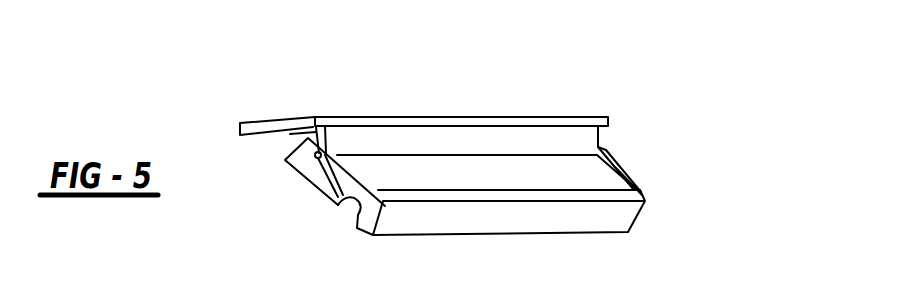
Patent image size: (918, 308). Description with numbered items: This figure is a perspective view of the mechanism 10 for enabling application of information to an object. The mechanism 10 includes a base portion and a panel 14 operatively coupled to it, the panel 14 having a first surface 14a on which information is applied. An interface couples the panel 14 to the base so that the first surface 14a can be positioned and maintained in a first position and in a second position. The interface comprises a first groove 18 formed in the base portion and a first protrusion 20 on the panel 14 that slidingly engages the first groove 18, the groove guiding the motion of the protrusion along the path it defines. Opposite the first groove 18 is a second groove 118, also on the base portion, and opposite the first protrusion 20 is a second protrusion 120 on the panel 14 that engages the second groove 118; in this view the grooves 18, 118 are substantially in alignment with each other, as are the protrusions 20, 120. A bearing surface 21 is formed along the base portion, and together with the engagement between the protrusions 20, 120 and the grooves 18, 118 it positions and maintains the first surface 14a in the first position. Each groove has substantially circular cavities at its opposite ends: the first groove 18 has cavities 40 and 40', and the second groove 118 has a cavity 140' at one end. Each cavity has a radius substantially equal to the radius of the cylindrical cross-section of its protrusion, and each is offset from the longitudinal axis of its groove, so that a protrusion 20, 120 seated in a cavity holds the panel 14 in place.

The mechanism 10 is at (600, 289).
The panel 14 is at (238, 125).
The first surface 14a is at (280, 118).
The first groove 18 is at (327, 192).
The first protrusion 20 is at (306, 161).
The bearing surface 21 is at (420, 192).
The substantially circular cavity 40 is at (355, 246).
The substantially circular cavity 40' is at (377, 92).
The second groove 118 is at (612, 172).
The second protrusion 120 is at (607, 142).
The substantially circular cavity 140' is at (537, 97).